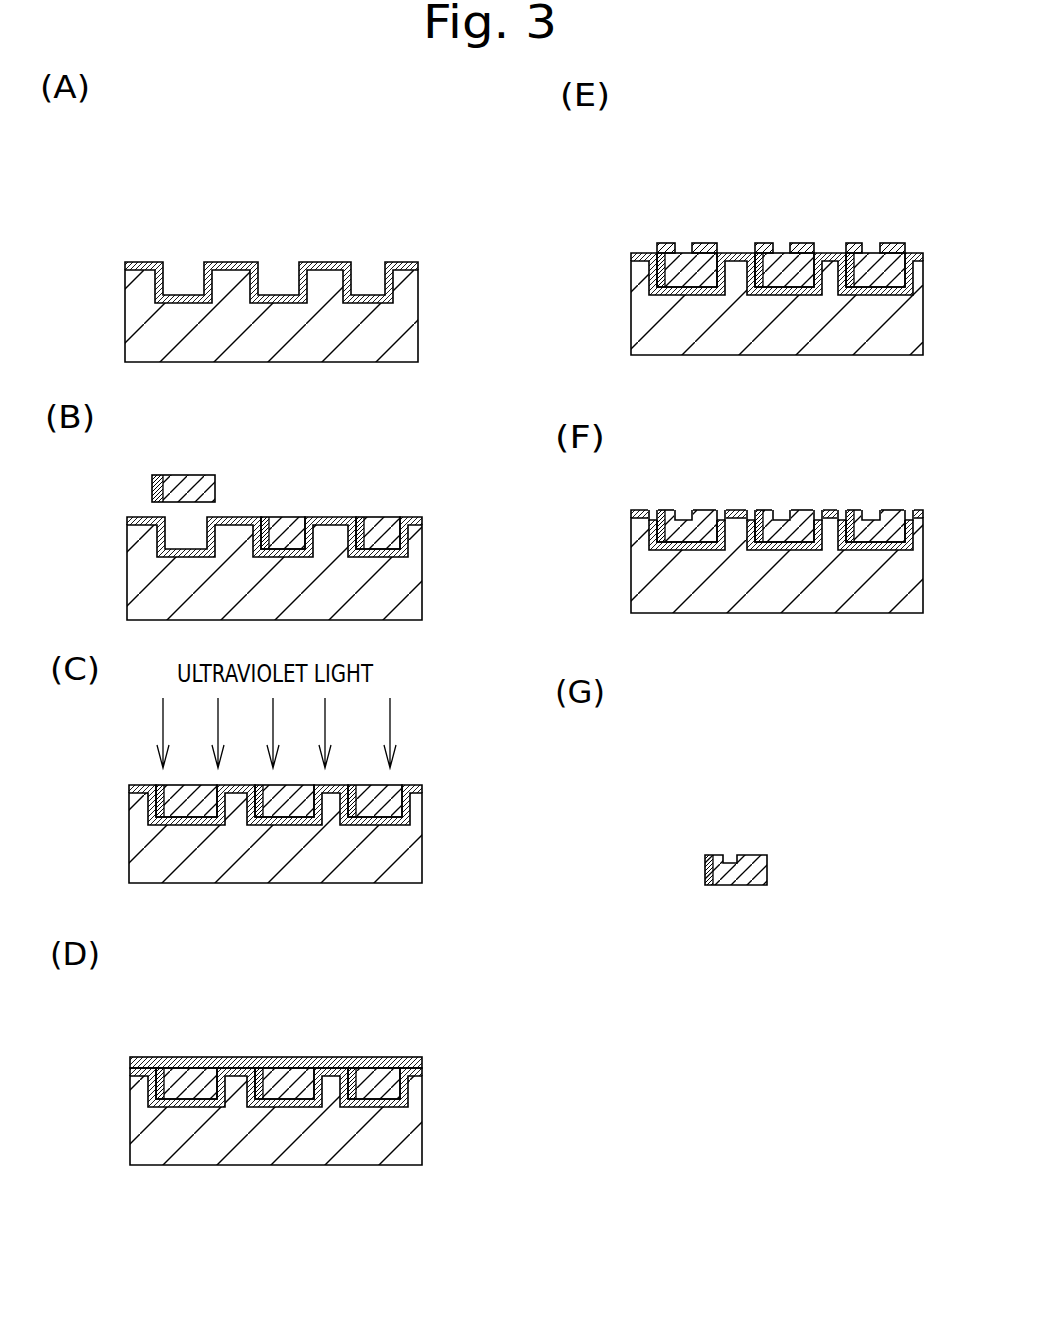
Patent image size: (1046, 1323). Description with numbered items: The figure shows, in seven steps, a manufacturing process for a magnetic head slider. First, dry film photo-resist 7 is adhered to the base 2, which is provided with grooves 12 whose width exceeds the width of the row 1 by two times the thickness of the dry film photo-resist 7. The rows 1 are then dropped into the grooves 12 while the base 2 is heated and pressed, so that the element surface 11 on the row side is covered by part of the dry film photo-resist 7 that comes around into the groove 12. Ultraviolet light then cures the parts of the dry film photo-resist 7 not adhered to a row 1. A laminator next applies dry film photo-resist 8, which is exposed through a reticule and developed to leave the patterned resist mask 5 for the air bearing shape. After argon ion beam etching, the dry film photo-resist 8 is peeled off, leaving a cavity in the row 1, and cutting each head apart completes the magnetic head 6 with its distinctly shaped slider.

The row 1 is at (212, 485).
The base 2 is at (420, 330).
The resist mask 5 is at (702, 243).
The magnetic head 6 is at (747, 857).
The dry film photo-resist 7 is at (225, 262).
The dry film photo-resist 8 is at (193, 1057).
The element surface 11 is at (152, 490).
The groove 12 is at (183, 282).